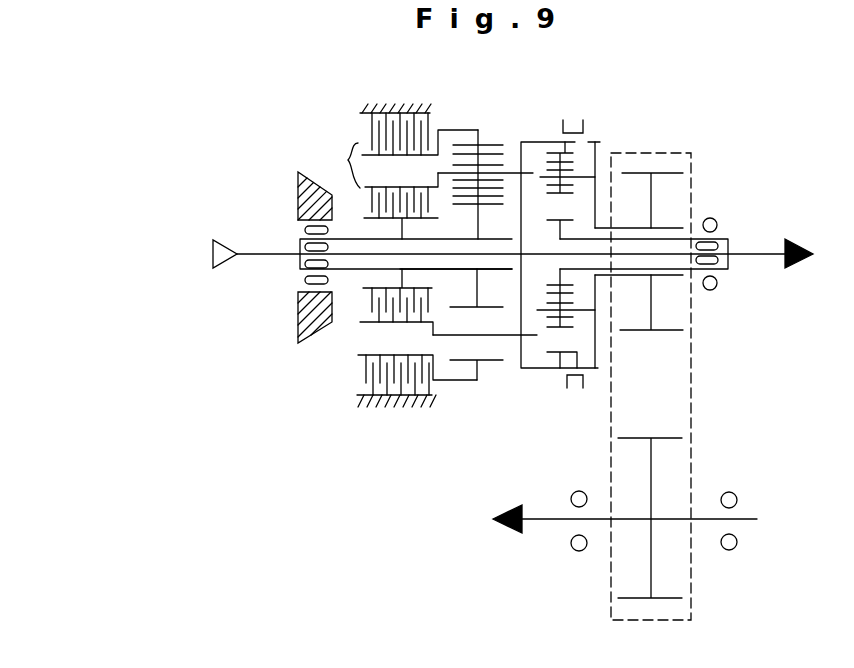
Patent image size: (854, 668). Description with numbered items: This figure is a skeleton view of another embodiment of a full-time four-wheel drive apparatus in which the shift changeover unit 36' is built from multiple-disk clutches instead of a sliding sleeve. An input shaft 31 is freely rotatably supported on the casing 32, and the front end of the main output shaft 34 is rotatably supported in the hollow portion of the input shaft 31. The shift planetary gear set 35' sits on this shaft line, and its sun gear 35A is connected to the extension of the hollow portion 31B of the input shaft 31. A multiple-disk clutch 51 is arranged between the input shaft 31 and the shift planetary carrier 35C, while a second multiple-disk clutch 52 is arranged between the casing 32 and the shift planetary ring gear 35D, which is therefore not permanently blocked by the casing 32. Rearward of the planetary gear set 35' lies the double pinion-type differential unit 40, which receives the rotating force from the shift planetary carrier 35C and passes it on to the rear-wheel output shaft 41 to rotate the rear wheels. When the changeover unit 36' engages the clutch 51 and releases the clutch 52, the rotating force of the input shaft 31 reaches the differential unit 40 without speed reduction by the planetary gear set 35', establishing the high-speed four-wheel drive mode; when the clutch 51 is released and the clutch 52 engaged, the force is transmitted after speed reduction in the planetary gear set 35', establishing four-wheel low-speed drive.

The input shaft 31 is at (262, 252).
The hollow portion of the input shaft 31B is at (438, 270).
The casing 32 is at (365, 118).
The main output shaft 34 is at (605, 228).
The planetary gear set 35' is at (545, 225).
The sun gear 35A is at (468, 226).
The shift planetary carrier 35C is at (450, 181).
The shift planetary ring gear 35D is at (495, 142).
The shift changeover unit 36' is at (297, 161).
The differential unit 40 is at (600, 124).
The rear-wheel output shaft 41 is at (753, 248).
The multiple-disk clutch 51 is at (356, 200).
The multiple-disk clutch 52 is at (350, 131).